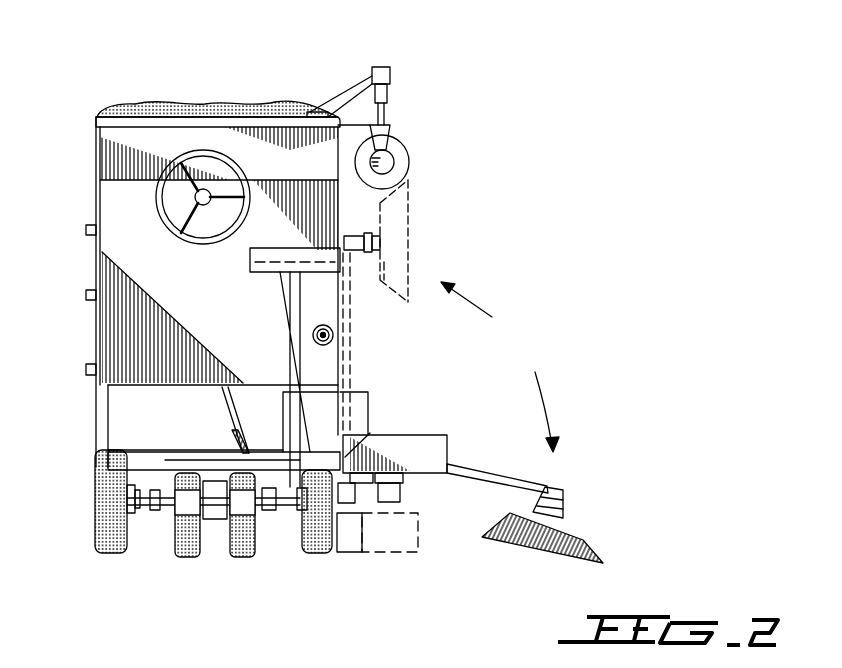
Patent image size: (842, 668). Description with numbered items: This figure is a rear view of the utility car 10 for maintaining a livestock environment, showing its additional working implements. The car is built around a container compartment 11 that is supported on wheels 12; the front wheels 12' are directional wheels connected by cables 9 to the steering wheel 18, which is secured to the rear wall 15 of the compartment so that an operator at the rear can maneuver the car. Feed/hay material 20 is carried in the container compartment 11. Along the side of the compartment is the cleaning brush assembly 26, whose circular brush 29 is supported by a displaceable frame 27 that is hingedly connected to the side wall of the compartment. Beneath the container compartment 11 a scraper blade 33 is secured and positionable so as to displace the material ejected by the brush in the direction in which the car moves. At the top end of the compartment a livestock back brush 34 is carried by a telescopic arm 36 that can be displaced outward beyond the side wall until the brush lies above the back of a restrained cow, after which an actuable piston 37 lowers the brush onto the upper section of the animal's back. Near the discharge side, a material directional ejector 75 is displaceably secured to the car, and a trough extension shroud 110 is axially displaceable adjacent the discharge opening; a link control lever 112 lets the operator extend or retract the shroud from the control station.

The utility car 10 is at (84, 87).
The feed/hay material 20 is at (203, 105).
The steering wheel 18 is at (203, 245).
The container compartment 11 is at (130, 289).
The rear wall 15 is at (110, 330).
The link control lever 112 is at (284, 308).
The cables 9 is at (223, 407).
The wheels 12 is at (185, 501).
The front wheels 12' is at (215, 542).
The trough extension shroud 110 is at (362, 403).
The material directional ejector 75 is at (433, 431).
The displaceable frame 27 is at (525, 484).
The circular brush 29 is at (543, 547).
The cleaning brush assembly 26 is at (424, 245).
The scraper blade 33 is at (348, 533).
The livestock back brush 34 is at (398, 167).
The telescopic arm 36 is at (360, 126).
The actuable piston 37 is at (390, 74).